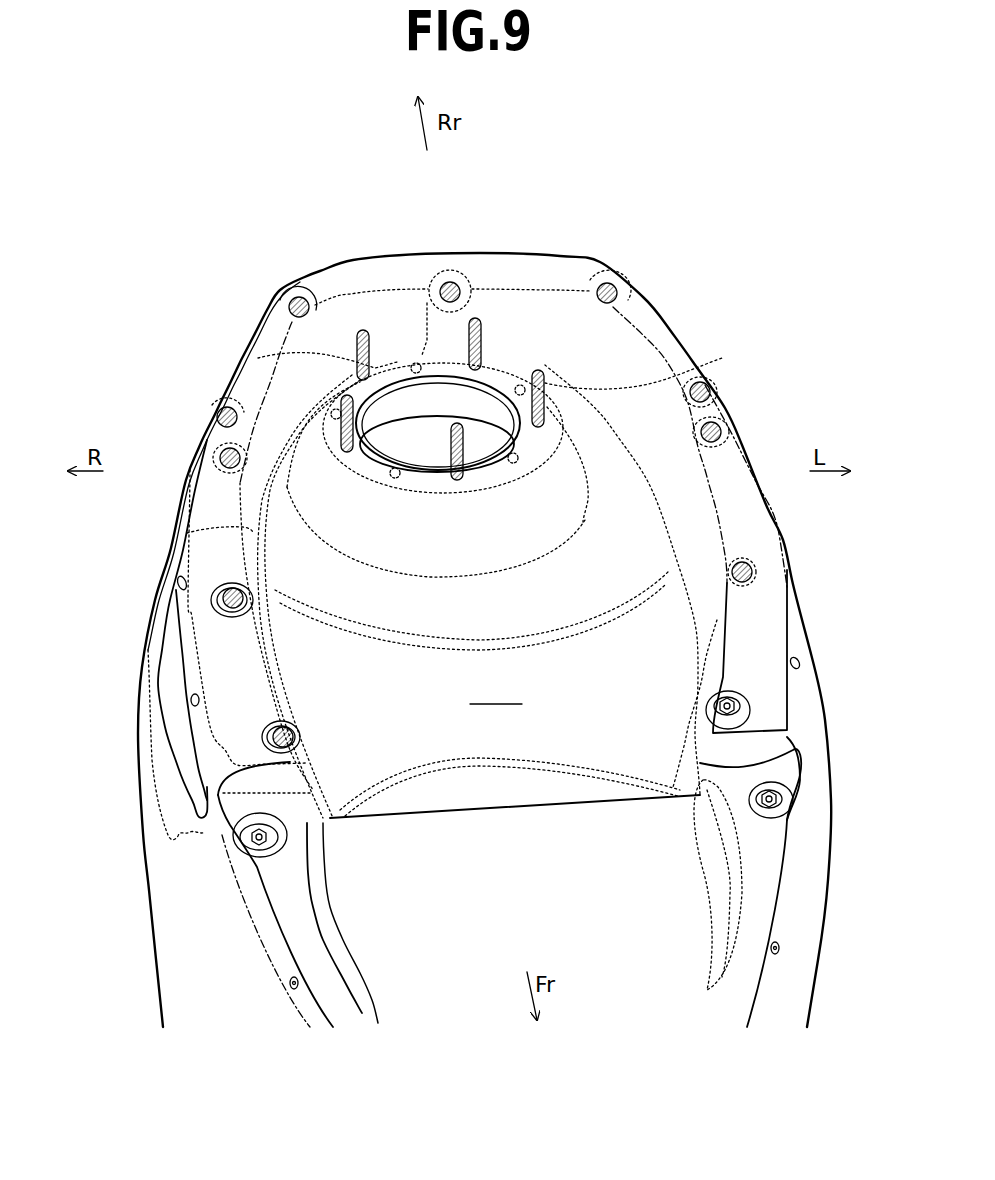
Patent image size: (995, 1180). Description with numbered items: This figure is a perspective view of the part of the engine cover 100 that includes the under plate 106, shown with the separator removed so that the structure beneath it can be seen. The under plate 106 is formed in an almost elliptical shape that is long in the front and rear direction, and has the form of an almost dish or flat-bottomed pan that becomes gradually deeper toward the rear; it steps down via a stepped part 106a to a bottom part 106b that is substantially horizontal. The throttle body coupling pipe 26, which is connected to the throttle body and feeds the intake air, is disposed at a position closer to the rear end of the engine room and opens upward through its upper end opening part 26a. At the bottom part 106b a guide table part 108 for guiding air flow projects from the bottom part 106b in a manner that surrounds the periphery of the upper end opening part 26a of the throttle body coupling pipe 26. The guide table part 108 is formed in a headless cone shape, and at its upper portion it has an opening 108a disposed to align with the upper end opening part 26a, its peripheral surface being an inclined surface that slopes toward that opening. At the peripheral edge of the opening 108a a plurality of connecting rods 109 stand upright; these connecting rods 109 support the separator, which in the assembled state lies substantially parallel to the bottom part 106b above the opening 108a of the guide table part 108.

The engine cover 100 is at (187, 923).
The under plate 106 is at (178, 538).
The stepped part 106a is at (478, 802).
The bottom part 106b is at (499, 692).
The guide table part 108 is at (668, 373).
The opening 108a is at (392, 357).
The connecting rods 109 is at (480, 316).
The throttle body coupling pipe 26 is at (378, 417).
The upper end opening part 26a is at (420, 365).